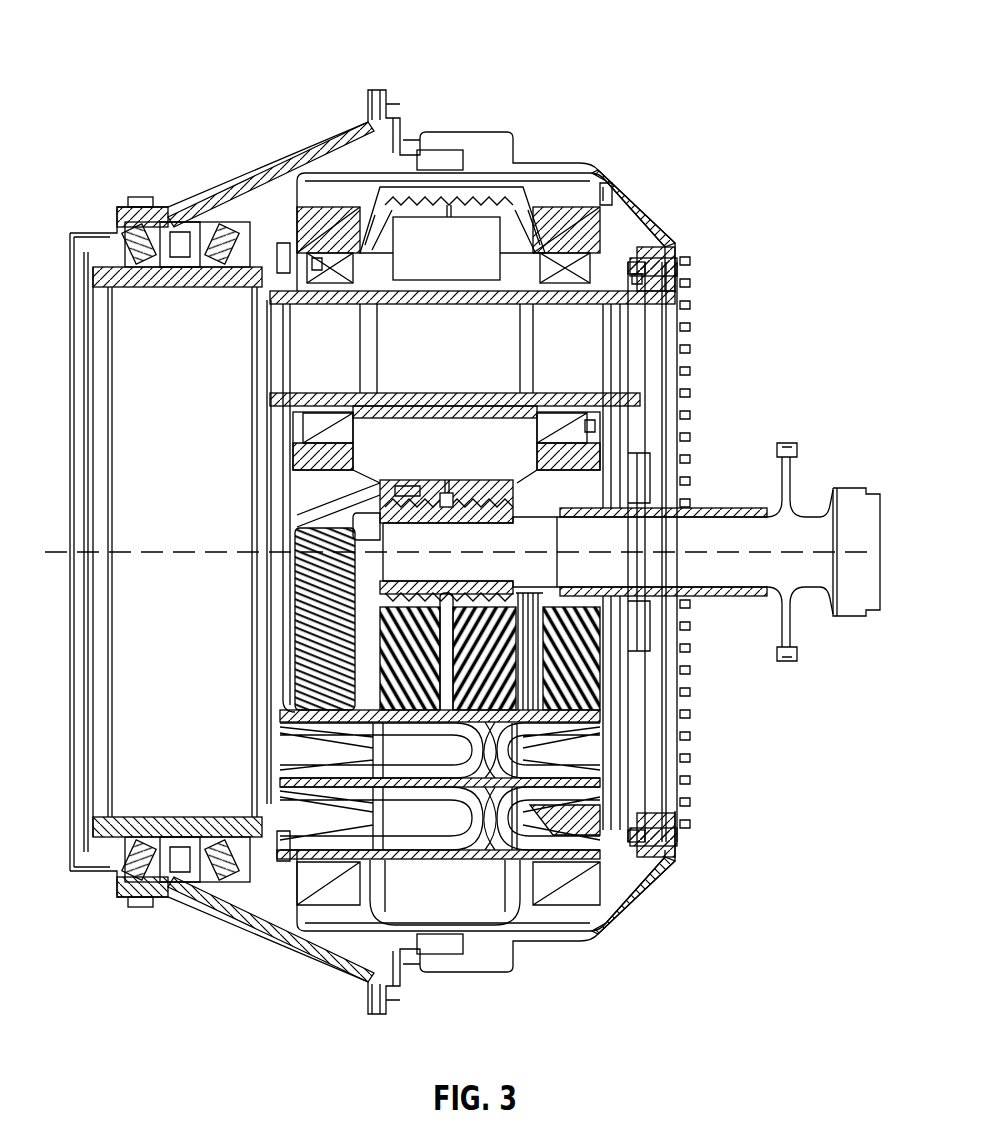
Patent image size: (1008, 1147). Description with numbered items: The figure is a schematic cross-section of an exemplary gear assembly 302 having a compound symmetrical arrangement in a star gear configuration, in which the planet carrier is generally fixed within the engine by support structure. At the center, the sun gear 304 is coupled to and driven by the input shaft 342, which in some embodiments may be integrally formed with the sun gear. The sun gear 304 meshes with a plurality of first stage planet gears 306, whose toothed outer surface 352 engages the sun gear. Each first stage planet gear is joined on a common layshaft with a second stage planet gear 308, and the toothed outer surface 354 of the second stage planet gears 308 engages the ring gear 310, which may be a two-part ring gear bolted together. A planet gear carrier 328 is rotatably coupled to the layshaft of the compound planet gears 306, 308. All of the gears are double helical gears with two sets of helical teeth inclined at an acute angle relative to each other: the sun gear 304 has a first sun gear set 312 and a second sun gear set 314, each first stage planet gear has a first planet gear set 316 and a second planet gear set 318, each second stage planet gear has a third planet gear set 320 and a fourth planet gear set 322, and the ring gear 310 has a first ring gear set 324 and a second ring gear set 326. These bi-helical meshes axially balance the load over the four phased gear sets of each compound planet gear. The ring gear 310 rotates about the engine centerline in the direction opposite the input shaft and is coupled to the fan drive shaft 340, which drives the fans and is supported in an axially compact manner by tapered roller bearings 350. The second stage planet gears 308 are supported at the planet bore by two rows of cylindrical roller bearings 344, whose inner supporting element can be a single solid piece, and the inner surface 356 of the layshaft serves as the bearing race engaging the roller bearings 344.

The gear assembly 302 is at (750, 40).
The sun gear 304 is at (507, 510).
The first stage planet gears 306 is at (513, 178).
The second stage planet gears 308 is at (600, 240).
The ring gear 310 is at (343, 212).
The first sun gear set 312 is at (293, 657).
The second sun gear set 314 is at (600, 625).
The first planet gear set 316 is at (313, 433).
The second planet gear set 318 is at (575, 465).
The third planet gear set 320 is at (307, 240).
The fourth planet gear set 322 is at (589, 215).
The first ring gear set 324 is at (300, 245).
The second ring gear set 326 is at (608, 182).
The planet gear carrier 328 is at (670, 312).
The fan drive shaft 340 is at (175, 278).
The input shaft 342 is at (843, 497).
The cylindrical roller bearings 344 is at (317, 262).
The tapered roller bearings 350 is at (236, 262).
The outer surface of first stage planet gears 352 is at (482, 206).
The outer surface of second stage planet gears 354 is at (572, 237).
The inner surface 356 is at (598, 272).